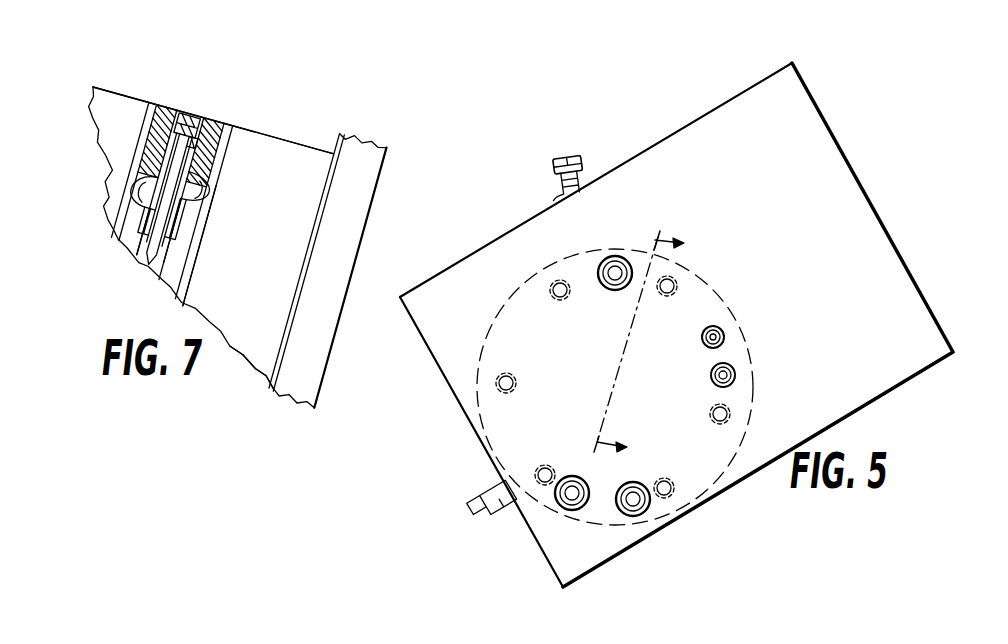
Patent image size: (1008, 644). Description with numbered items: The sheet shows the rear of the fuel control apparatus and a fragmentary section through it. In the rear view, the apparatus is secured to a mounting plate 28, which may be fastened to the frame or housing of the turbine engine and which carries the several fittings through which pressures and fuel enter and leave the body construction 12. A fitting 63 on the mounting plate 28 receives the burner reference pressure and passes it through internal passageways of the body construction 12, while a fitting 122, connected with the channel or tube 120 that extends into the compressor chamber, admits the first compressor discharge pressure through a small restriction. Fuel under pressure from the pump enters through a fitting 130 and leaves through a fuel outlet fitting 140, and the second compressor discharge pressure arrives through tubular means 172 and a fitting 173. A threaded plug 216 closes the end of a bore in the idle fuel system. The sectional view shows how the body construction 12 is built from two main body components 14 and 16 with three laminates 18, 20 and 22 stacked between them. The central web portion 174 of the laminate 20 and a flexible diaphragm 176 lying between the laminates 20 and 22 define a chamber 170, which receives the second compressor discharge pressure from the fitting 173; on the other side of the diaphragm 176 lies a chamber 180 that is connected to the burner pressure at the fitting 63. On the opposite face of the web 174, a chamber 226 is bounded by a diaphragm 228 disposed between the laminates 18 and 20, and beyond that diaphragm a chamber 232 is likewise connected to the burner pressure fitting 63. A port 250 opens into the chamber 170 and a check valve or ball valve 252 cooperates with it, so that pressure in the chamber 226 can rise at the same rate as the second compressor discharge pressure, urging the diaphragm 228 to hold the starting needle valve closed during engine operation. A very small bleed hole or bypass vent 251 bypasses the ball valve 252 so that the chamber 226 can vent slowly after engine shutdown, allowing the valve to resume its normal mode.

In FIG. 7, the body construction 12 is at (223, 103).
In FIG. 7, the main body component 14 is at (102, 87).
In FIG. 7, the main body component 16 is at (257, 360).
In FIG. 7, the laminate 18 is at (166, 108).
In FIG. 7, the laminate 20 is at (153, 267).
In FIG. 7, the laminate 22 is at (180, 280).
In FIG. 7, the mounting plate 28 is at (362, 148).
In FIG. 5, the mounting plate 28 is at (841, 151).
In FIG. 5, the fitting 63 is at (641, 516).
In FIG. 5, the channel or tube 120 is at (733, 370).
In FIG. 5, the fitting 122 is at (735, 376).
In FIG. 5, the fitting 130 is at (564, 508).
In FIG. 5, the fuel outlet fitting 140 is at (609, 259).
In FIG. 7, the chamber 170 is at (137, 243).
In FIG. 5, the tubular means 172 is at (718, 328).
In FIG. 5, the fitting 173 is at (722, 333).
In FIG. 7, the central web portion 174 is at (187, 183).
In FIG. 7, the flexible diaphragm 176 is at (198, 181).
In FIG. 7, the chamber 180 is at (206, 207).
In FIG. 5, the threaded plug 216 is at (480, 501).
In FIG. 7, the chamber 226 is at (180, 203).
In FIG. 7, the diaphragm 228 is at (150, 165).
In FIG. 7, the chamber 232 is at (160, 176).
In FIG. 7, the port 250 is at (203, 112).
In FIG. 7, the bleed hole or bypass vent 251 is at (213, 128).
In FIG. 7, the check valve or ball valve 252 is at (186, 122).